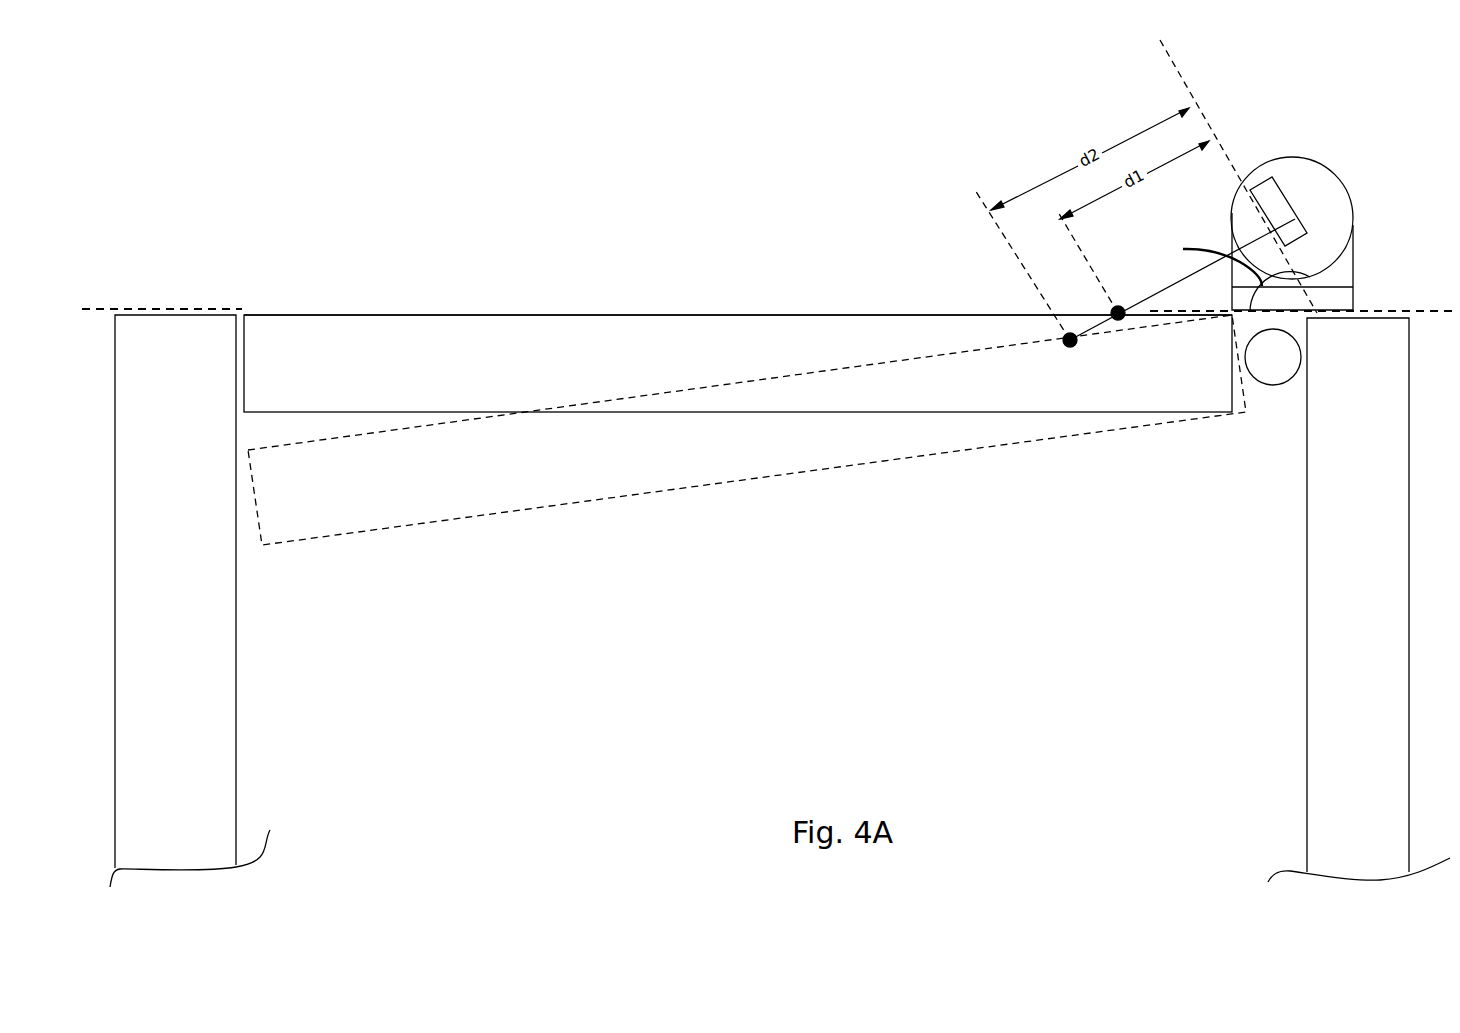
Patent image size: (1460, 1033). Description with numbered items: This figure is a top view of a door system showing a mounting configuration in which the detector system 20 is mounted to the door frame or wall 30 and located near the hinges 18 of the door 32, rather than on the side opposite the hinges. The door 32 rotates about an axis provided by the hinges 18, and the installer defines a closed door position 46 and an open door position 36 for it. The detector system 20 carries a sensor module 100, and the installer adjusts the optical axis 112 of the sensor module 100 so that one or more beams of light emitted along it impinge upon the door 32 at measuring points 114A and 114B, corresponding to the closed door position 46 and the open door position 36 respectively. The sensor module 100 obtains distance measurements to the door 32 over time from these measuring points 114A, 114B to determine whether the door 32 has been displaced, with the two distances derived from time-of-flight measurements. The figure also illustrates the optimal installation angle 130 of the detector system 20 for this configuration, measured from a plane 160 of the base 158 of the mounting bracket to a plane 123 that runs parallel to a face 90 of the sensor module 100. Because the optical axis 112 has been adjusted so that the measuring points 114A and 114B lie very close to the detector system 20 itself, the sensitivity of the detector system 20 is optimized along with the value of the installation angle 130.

The hinges 18 is at (1276, 367).
The detector system 20 is at (1333, 132).
The door frame or wall 30 is at (780, 601).
The door 32 is at (738, 363).
The open door position 36 is at (843, 471).
The closed door position 46 is at (571, 312).
The face of the sensor module 90 is at (1232, 216).
The sensor module 100 is at (1300, 215).
The optical axis 112 is at (1155, 298).
The measuring point 114A is at (1101, 301).
The measuring point 114B is at (1054, 352).
The plane 123 is at (1213, 116).
The installation angle 130 is at (1204, 266).
The base 158 is at (1345, 297).
The plane of the base 160 is at (98, 308).